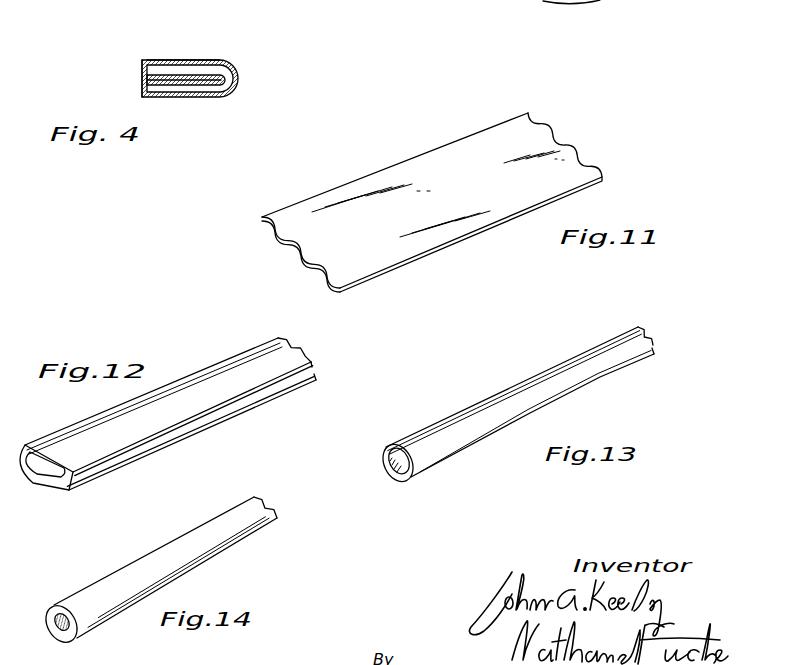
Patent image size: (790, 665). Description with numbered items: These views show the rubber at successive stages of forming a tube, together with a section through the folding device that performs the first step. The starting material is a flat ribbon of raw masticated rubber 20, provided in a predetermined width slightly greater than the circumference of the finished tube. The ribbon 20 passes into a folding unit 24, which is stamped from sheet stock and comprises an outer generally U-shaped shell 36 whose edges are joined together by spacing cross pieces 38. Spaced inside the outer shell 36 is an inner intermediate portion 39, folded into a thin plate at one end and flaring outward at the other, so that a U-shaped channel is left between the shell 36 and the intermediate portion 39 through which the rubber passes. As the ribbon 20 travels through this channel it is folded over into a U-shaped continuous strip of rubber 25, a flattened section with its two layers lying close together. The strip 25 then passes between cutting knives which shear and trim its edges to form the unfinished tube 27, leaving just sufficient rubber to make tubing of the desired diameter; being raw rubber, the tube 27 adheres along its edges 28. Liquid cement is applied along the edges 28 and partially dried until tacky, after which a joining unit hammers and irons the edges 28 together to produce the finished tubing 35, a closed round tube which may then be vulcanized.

In FIG. 11, the ribbon of raw masticated rubber 20 is at (412, 165).
In FIG. 12, the ribbon of raw masticated rubber 20 is at (78, 440).
In FIG. 4, the folding unit 24 is at (186, 60).
In FIG. 12, the U-shaped continuous ribbon or strip of rubber 25 is at (73, 455).
In FIG. 13, the unfinished tube 27 is at (473, 425).
In FIG. 13, the edges 28 is at (412, 481).
In FIG. 14, the finished tubing 35 is at (88, 602).
In FIG. 4, the outer generally U-shaped shell 36 is at (163, 60).
In FIG. 4, the spacing cross pieces 38 is at (142, 67).
In FIG. 4, the inner intermediate portion 39 is at (184, 85).